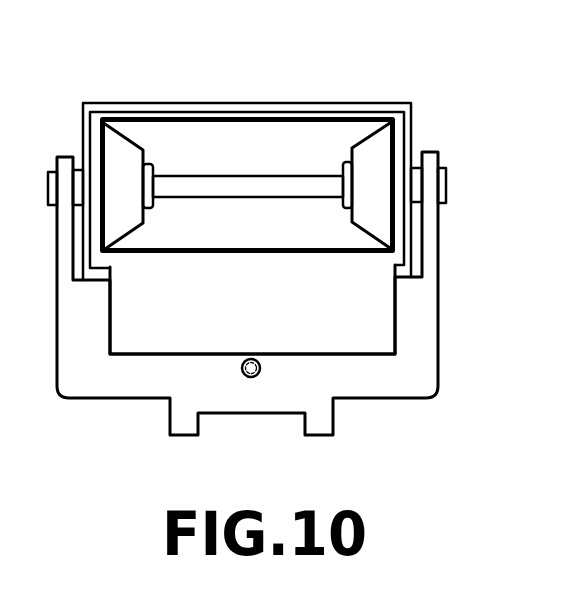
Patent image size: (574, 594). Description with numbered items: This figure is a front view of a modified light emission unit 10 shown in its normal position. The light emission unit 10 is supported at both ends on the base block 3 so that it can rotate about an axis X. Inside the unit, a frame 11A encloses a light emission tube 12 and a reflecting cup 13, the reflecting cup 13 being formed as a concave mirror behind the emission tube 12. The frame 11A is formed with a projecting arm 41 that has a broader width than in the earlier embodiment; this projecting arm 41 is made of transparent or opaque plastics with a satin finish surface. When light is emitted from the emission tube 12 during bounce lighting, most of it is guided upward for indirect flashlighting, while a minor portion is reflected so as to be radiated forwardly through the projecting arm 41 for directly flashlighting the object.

The light emission unit 10 is at (384, 92).
The frame 11A is at (160, 111).
The reflecting cup 13 is at (235, 130).
The light emission tube 12 is at (306, 187).
The axis X is at (447, 187).
The projecting arm 41 is at (385, 293).
The base block 3 is at (430, 360).